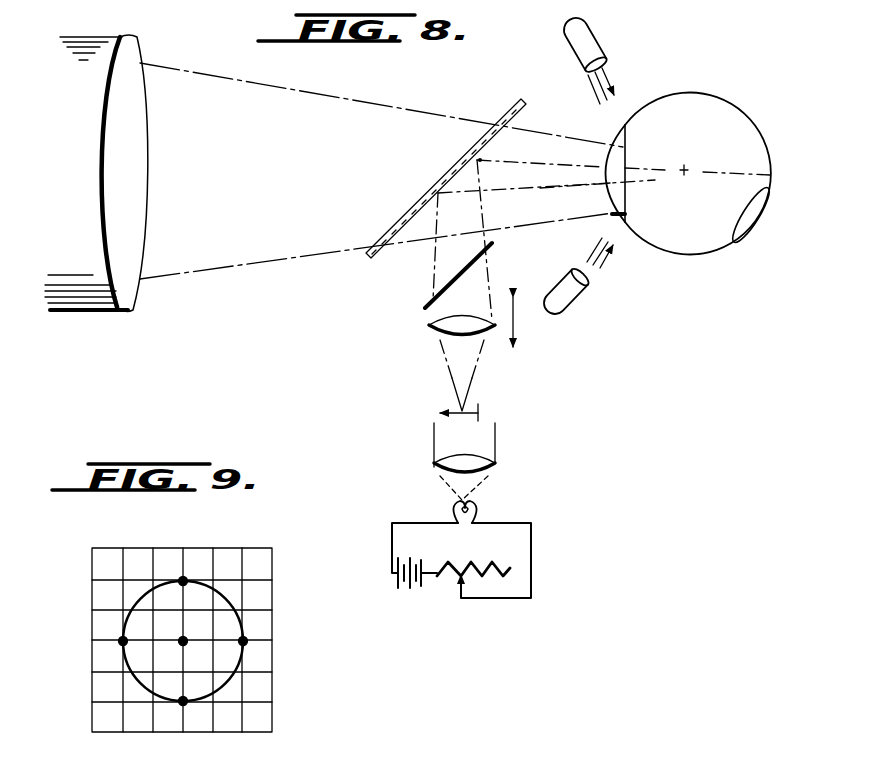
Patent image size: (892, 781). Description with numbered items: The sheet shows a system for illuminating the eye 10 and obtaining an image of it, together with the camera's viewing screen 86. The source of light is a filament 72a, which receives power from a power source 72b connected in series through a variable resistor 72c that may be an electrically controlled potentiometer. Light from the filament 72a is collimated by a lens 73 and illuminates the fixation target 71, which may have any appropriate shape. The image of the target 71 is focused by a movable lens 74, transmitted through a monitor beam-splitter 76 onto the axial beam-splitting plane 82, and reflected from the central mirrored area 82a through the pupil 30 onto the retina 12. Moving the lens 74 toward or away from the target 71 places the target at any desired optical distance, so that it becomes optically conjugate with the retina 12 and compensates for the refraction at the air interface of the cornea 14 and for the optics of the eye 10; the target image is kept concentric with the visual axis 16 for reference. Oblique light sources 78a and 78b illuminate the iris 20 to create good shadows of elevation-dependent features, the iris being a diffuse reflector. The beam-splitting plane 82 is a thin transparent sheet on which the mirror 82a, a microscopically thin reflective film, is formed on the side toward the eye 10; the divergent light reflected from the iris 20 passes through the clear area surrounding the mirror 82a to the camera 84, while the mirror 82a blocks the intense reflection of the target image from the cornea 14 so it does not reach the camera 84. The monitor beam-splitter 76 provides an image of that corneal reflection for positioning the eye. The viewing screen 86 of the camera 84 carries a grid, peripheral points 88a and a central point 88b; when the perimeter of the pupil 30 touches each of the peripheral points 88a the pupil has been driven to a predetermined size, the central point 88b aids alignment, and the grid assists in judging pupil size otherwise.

In FIG. 8, the eye 10 is at (702, 74).
In FIG. 8, the retina 12 is at (735, 242).
In FIG. 8, the cornea 14 is at (594, 195).
In FIG. 8, the visual axis 16 is at (684, 172).
In FIG. 8, the iris 20 is at (625, 195).
In FIG. 8, the pupil 30 is at (622, 173).
In FIG. 9, the pupil 30 is at (125, 610).
In FIG. 8, the fixation target 71 is at (481, 412).
In FIG. 8, the lens 73 is at (497, 464).
In FIG. 8, the filament 72a is at (480, 510).
In FIG. 8, the power source 72b is at (410, 595).
In FIG. 8, the variable resistor 72c is at (446, 578).
In FIG. 8, the movable lens 74 is at (430, 326).
In FIG. 8, the monitor beam-splitter 76 is at (424, 300).
In FIG. 8, the oblique light source 78a is at (580, 300).
In FIG. 8, the oblique light source 78b is at (603, 48).
In FIG. 8, the axial beam-splitting plane 82 is at (520, 102).
In FIG. 8, the central mirrored area 82a is at (480, 160).
In FIG. 8, the camera 84 is at (82, 312).
In FIG. 9, the viewing screen 86 is at (116, 734).
In FIG. 9, the peripheral points 88a is at (185, 578).
In FIG. 9, the central point 88b is at (186, 643).